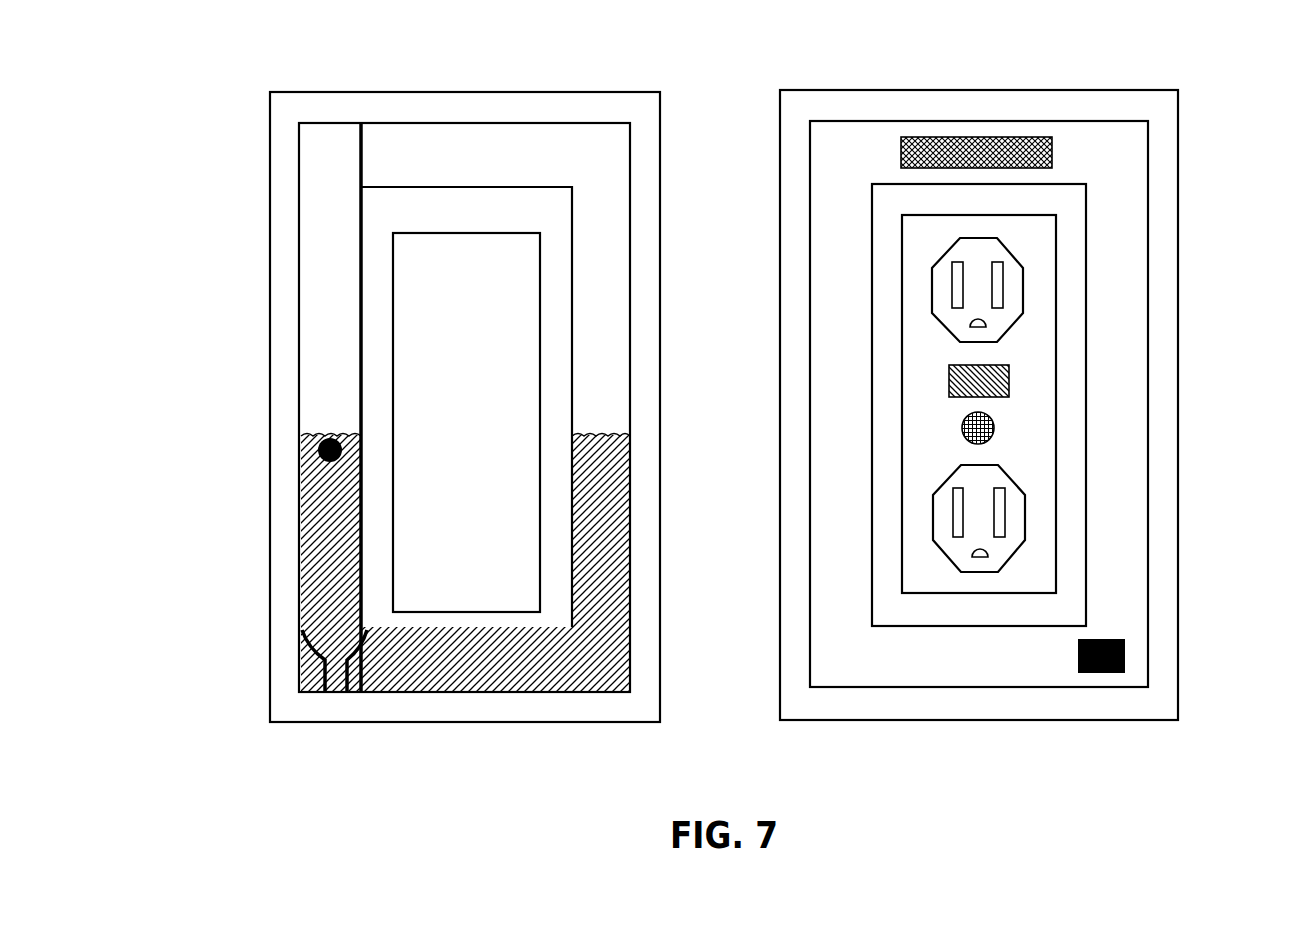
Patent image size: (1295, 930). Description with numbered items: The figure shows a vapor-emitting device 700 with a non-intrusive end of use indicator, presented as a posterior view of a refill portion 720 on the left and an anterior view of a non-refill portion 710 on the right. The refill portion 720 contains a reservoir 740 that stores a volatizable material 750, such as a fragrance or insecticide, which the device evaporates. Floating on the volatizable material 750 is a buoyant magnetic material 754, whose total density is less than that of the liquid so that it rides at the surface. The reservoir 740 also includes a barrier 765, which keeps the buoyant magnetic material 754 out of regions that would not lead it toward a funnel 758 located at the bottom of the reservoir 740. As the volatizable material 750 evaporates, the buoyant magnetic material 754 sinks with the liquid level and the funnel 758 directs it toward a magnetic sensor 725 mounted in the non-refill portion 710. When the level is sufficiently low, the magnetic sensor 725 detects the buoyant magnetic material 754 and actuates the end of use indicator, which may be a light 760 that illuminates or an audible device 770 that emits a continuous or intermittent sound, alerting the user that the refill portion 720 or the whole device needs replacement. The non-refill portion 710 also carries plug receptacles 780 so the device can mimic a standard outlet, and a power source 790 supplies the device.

The vapor-emitting device 700 is at (226, 89).
The non-refill portion 710 is at (967, 90).
The refill portion 720 is at (459, 92).
The magnetic sensor 725 is at (1125, 650).
The reservoir 740 is at (299, 337).
The volatizable material 750 is at (327, 547).
The buoyant magnetic material 754 is at (303, 442).
The funnel 758 is at (303, 654).
The light 760 is at (1009, 372).
The barrier 765 is at (361, 172).
The audible device 770 is at (995, 418).
The plug receptacles 780 is at (1023, 288).
The power source 790 is at (945, 150).